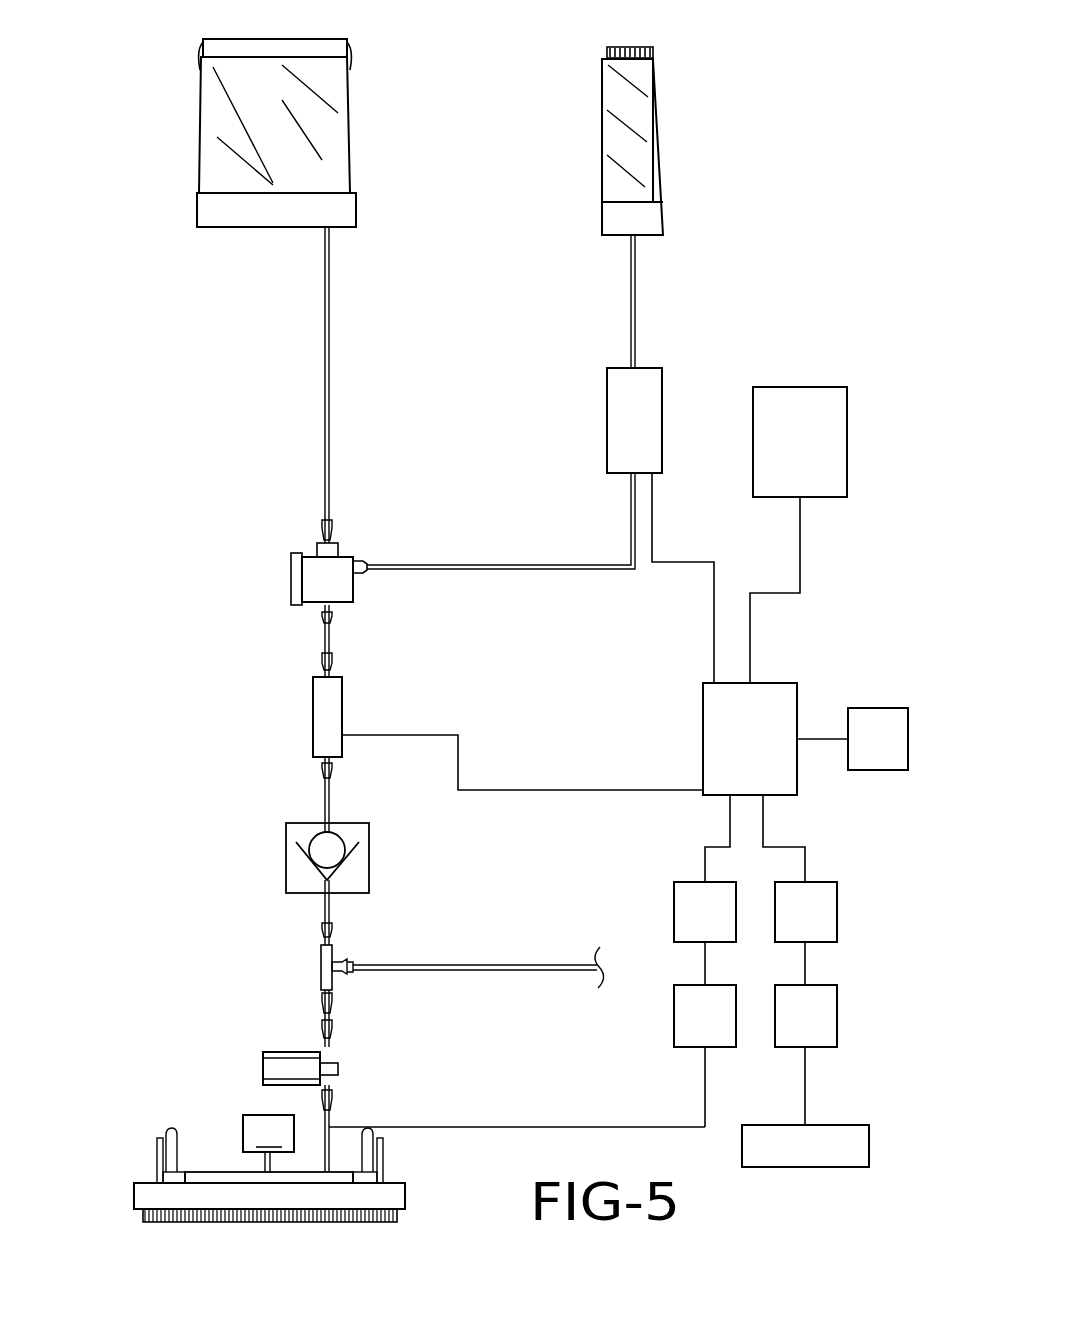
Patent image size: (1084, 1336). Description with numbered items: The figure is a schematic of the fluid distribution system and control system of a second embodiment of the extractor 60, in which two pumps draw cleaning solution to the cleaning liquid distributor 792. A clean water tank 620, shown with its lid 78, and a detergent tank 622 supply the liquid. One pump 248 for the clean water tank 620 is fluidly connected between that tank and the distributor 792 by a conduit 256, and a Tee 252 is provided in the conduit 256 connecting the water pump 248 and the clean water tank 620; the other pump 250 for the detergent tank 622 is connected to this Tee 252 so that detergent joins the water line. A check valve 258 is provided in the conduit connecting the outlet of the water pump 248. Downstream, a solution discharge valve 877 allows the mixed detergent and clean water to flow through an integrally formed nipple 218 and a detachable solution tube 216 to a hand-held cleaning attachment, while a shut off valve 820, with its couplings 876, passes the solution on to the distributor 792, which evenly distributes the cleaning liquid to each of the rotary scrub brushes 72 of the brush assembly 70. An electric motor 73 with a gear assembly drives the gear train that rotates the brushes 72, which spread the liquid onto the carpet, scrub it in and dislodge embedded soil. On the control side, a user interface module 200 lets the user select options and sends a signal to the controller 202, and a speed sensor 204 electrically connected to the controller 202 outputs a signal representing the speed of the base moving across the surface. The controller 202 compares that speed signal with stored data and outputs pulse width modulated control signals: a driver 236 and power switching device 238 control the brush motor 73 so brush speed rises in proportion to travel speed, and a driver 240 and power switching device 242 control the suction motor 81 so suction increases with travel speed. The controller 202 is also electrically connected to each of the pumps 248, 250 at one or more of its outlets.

The lid 78 is at (222, 52).
The clean water tank 620 is at (228, 132).
The detergent tank 622 is at (612, 135).
The conduit 256 is at (326, 391).
The Tee 252 is at (347, 558).
The extractor 60 is at (612, 575).
The pump 250 is at (612, 372).
The speed sensor 204 is at (806, 396).
The controller 202 is at (765, 693).
The user interface module 200 is at (860, 718).
The pump 248 is at (330, 718).
The check valve 258 is at (305, 845).
The solution discharge valve 877 is at (322, 968).
The nipple 218 is at (341, 965).
The solution tube 216 is at (463, 970).
The coupling 876 is at (331, 1020).
The shut off valve 820 is at (332, 1062).
The electric motor 73 is at (268, 1143).
The cleaning liquid distributor 792 is at (205, 1172).
The brush assembly 70 is at (150, 1183).
The scrub brushes 72 is at (383, 1218).
The driver 236 is at (690, 918).
The power switching device 238 is at (690, 1025).
The driver 240 is at (820, 905).
The power switching device 242 is at (820, 1015).
The suction motor 81 is at (835, 1135).